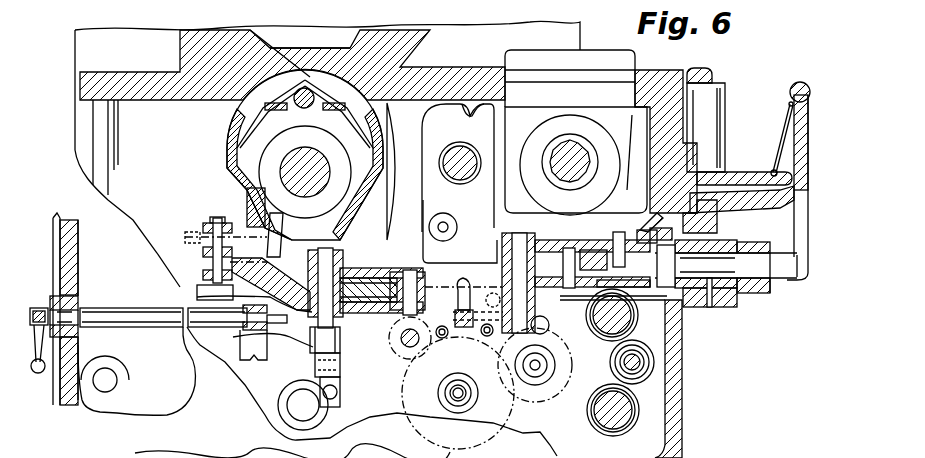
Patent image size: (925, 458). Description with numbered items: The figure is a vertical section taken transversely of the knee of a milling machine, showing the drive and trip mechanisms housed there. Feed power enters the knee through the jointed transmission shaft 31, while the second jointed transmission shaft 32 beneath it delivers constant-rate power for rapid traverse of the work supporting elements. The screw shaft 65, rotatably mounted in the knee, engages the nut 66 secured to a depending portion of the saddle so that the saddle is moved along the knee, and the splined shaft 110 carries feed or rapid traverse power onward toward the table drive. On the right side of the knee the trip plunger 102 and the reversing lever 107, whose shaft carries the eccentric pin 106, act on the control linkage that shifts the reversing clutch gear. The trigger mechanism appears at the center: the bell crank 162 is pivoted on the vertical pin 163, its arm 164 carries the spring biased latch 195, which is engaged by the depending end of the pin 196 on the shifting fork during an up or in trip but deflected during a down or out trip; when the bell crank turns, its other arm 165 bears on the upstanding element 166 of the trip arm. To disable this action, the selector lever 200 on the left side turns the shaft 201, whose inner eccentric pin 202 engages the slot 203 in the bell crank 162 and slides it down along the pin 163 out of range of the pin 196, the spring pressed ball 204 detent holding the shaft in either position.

The jointed transmission shaft 31 is at (620, 320).
The second jointed transmission shaft 32 is at (623, 407).
The screw shaft 65 is at (470, 150).
The nut 66 is at (463, 110).
The trip plunger 102 is at (713, 80).
The eccentric pin 106 is at (700, 193).
The reversing lever 107 is at (752, 290).
The splined shaft 110 is at (583, 137).
The bell crank 162 is at (341, 340).
The vertical pin 163 is at (343, 257).
The arm 164 is at (205, 280).
The arm 165 is at (333, 367).
The upstanding element 166 is at (300, 372).
The spring biased latch 195 is at (195, 293).
The pin 196 is at (271, 284).
The selector lever 200 is at (38, 374).
The shaft 201 is at (108, 326).
The eccentric pin 202 is at (286, 339).
The slot 203 is at (287, 321).
The spring pressed ball 204 is at (78, 317).